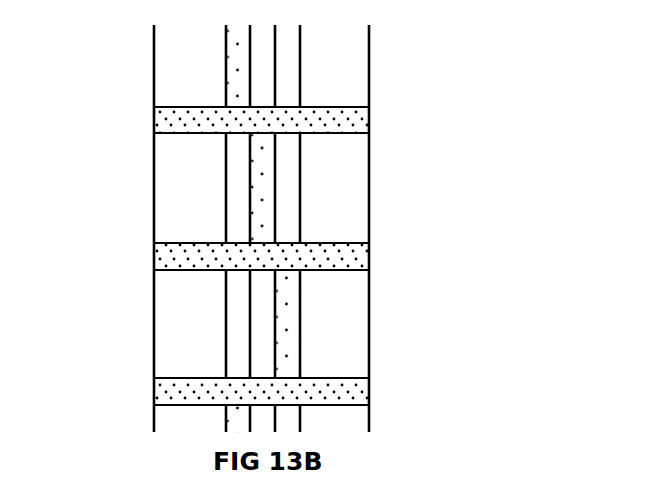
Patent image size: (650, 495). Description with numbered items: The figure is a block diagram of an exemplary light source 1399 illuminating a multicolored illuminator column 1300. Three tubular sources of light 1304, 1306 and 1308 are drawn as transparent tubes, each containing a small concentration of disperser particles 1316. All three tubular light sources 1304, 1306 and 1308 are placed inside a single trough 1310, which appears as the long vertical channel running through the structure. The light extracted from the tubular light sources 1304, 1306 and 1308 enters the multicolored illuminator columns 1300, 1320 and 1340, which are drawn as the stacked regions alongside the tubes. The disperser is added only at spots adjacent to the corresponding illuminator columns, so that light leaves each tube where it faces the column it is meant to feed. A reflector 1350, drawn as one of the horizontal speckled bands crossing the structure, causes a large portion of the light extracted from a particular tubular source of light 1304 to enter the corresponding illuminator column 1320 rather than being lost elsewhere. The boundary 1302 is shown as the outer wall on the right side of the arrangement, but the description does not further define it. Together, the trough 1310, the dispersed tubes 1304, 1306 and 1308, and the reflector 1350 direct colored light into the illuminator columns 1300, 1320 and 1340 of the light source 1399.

The light source 1399 is at (452, 20).
The trough 1310 is at (238, 51).
The multicolored illuminator column 1300 is at (357, 86).
The illuminator column 1320 is at (355, 198).
The reflector 1350 is at (369, 255).
The illuminator column 1340 is at (355, 287).
The outer wall 1302 is at (369, 354).
The tubular source of light 1308 is at (238, 192).
The tubular source of light 1304 is at (269, 233).
The disperser particles 1316 is at (288, 332).
The tubular source of light 1306 is at (288, 367).